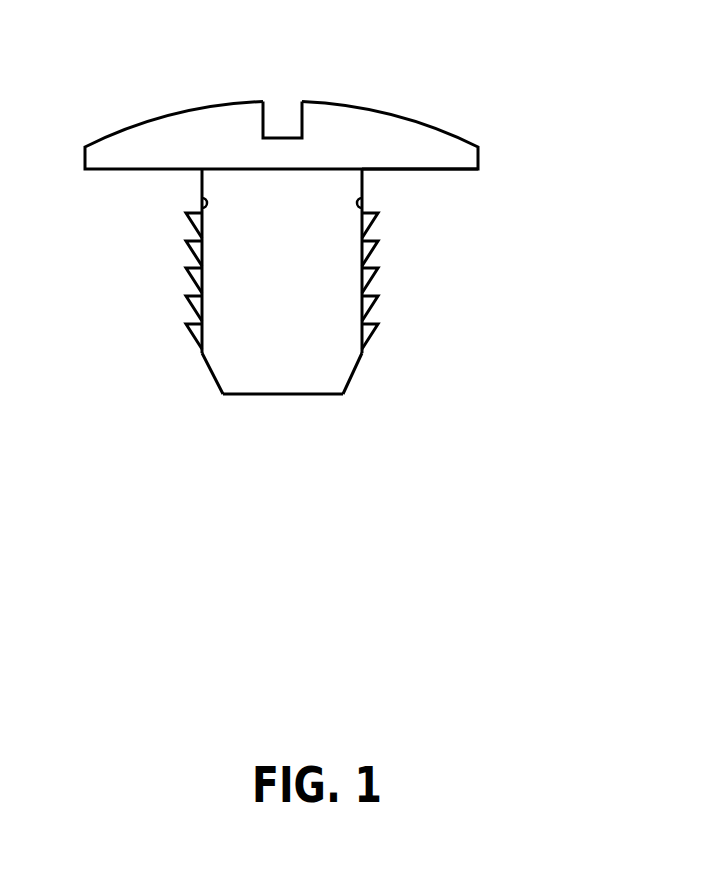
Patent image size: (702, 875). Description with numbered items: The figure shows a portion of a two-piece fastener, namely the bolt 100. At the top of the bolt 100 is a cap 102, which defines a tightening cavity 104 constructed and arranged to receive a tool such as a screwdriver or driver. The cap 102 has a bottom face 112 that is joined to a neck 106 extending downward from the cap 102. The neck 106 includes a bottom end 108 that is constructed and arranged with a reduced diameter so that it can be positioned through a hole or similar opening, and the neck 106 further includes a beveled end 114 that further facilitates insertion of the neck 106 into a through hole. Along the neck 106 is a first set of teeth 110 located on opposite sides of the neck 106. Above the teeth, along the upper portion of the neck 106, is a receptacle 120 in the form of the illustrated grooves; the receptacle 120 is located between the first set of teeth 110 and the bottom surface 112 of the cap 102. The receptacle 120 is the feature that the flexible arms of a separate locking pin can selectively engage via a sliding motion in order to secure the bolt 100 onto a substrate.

The bolt 100 is at (428, 78).
The cap 102 is at (447, 132).
The tightening cavity 104 is at (267, 120).
The neck 106 is at (333, 348).
The bottom end 108 is at (270, 395).
The first set of teeth 110 is at (187, 274).
The bottom face 112 is at (440, 169).
The beveled end 114 is at (343, 395).
The receptacle 120 is at (199, 198).